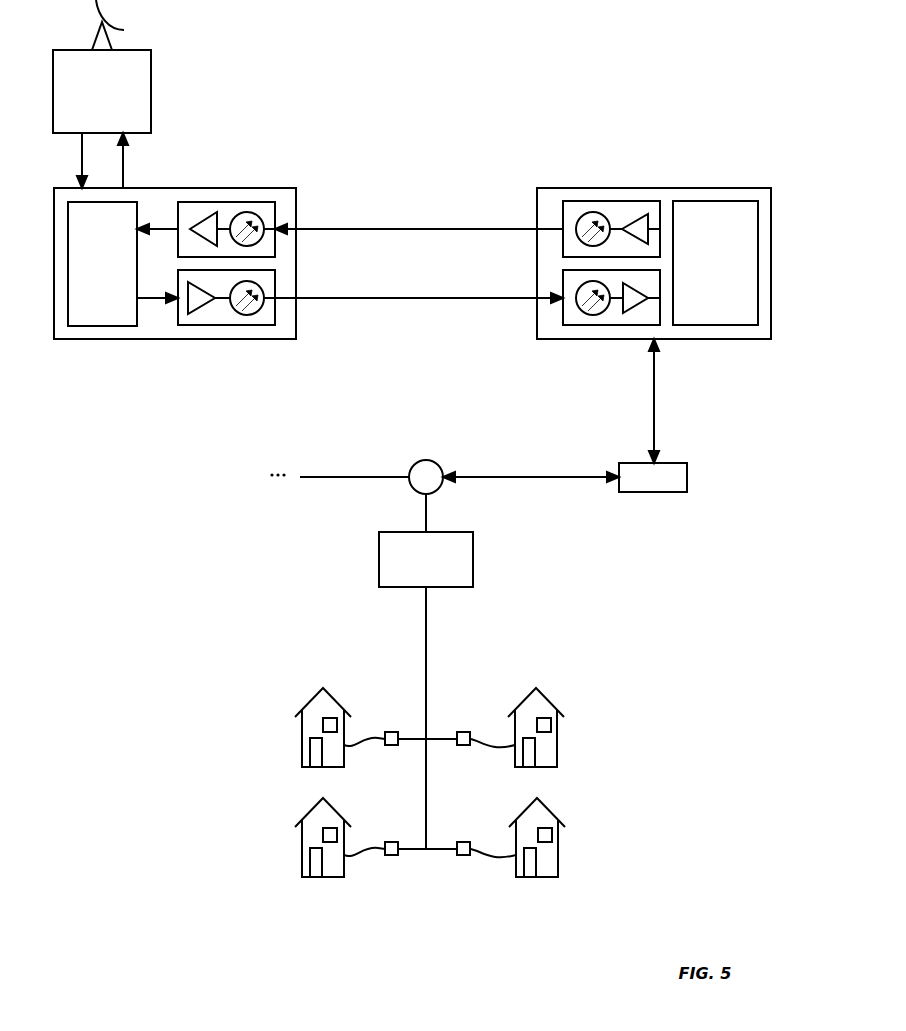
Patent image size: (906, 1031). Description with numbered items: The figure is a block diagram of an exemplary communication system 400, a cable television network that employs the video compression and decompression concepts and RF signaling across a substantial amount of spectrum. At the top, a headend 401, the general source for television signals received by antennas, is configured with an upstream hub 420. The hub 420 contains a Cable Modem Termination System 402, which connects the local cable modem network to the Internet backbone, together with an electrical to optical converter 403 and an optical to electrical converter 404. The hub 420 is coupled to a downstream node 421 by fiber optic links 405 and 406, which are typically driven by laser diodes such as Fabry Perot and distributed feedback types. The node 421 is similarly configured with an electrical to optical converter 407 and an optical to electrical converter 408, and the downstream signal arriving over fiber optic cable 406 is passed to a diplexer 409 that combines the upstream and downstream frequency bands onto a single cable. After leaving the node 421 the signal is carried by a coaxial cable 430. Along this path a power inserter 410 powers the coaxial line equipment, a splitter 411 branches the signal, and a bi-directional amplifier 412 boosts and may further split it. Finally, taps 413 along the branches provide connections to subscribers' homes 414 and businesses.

The communication system 400 is at (625, 82).
The headend 401 is at (88, 101).
The Cable Modem Termination System 402 is at (88, 282).
The electrical to optical converter 403 is at (212, 202).
The optical to electrical converter 404 is at (227, 339).
The optical communication link 405 is at (415, 228).
The optical communication link 406 is at (377, 298).
The electrical to optical converter 407 is at (612, 201).
The optical to electrical converter 408 is at (612, 325).
The diplexer 409 is at (701, 284).
The power inserter 410 is at (639, 486).
The splitter 411 is at (423, 460).
The bi-directional amplifier 412 is at (426, 690).
The tap 413 is at (391, 732).
The subscriber's home 414 is at (321, 685).
The upstream hub 420 is at (137, 339).
The downstream node 421 is at (752, 339).
The coaxial cable 430 is at (654, 422).